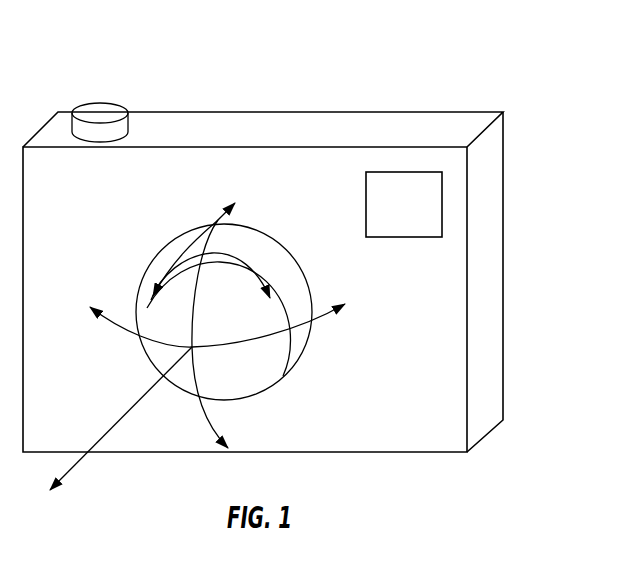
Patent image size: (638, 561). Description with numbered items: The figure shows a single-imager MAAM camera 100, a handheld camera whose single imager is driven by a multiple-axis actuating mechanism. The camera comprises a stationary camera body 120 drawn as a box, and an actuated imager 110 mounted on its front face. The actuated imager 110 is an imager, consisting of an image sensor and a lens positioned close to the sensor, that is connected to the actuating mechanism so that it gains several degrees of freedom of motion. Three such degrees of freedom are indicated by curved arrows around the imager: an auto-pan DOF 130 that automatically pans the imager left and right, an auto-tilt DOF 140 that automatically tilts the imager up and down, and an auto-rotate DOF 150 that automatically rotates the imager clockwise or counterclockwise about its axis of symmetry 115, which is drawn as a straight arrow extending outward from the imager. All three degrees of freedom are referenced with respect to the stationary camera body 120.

The single-imager MAAM camera 100 is at (425, 57).
The actuated imager 110 is at (197, 400).
The axis of symmetry 115 is at (127, 412).
The camera body 120 is at (468, 248).
The auto-pan DOF 130 is at (137, 336).
The auto-tilt DOF 140 is at (218, 220).
The auto-rotate DOF 150 is at (157, 278).